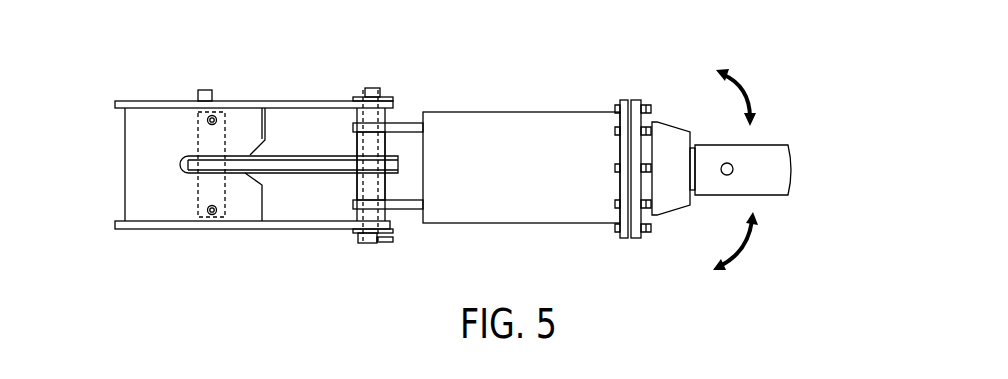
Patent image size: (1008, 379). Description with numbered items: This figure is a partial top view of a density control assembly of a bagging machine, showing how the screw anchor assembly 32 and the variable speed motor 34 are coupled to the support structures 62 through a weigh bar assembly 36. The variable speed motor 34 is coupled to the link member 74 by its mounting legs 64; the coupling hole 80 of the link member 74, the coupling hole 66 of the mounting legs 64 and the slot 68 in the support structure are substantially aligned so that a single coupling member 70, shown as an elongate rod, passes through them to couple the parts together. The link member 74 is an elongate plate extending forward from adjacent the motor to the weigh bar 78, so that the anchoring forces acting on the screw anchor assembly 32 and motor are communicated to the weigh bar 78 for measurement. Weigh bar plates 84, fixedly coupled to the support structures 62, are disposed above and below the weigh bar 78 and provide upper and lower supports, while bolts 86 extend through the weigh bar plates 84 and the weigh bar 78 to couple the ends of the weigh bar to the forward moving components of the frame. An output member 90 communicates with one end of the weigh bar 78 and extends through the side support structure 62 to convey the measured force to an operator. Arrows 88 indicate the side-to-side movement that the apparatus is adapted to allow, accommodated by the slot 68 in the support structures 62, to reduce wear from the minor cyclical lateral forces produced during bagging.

The screw anchor assembly 32 is at (772, 130).
The variable speed motor 34 is at (572, 102).
The weigh bar assembly 36 is at (352, 73).
The support structures 62 is at (143, 102).
The mounting legs 64 is at (410, 200).
The coupling hole 66 is at (388, 212).
The slot 68 is at (358, 237).
The coupling member 70 is at (388, 97).
The link member 74 is at (268, 165).
The weigh bar 78 is at (217, 138).
The coupling hole 80 is at (363, 175).
The weigh bar plates 84 is at (137, 137).
The bolts 86 is at (213, 120).
The arrows 88 is at (747, 95).
The output member 90 is at (207, 92).